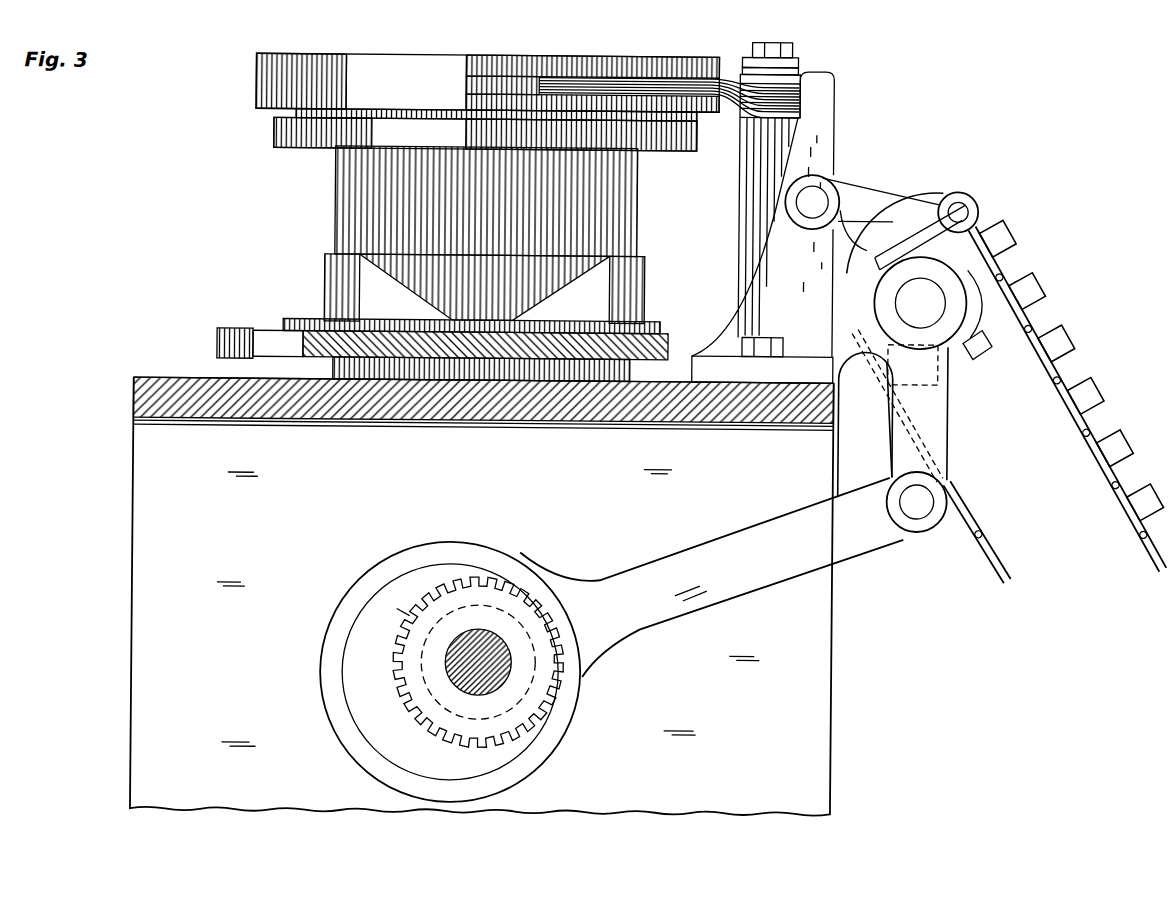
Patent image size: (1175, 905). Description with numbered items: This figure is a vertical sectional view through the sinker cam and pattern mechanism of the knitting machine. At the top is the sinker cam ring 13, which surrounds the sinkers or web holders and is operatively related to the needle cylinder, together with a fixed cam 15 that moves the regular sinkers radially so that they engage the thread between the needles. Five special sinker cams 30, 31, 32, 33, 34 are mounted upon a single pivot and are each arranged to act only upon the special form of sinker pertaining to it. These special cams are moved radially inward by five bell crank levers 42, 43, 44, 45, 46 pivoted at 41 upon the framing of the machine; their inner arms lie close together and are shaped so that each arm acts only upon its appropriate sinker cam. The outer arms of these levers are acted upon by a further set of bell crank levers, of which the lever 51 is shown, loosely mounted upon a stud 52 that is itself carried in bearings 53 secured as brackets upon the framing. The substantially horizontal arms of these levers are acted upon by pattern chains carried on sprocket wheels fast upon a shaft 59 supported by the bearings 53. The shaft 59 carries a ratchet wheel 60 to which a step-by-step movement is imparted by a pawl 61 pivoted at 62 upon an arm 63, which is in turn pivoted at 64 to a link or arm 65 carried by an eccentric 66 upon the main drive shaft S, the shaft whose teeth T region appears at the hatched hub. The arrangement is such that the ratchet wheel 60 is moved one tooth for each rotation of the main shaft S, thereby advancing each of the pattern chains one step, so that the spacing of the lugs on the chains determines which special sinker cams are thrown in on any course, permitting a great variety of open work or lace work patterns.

The sinker cam ring 13 is at (326, 59).
The fixed sinker cam 15 is at (612, 68).
The special sinker cam 30 is at (545, 78).
The special sinker cam 31 is at (540, 75).
The special sinker cam 32 is at (548, 83).
The special sinker cam 33 is at (556, 83).
The special sinker cam 34 is at (566, 80).
The pivot 41 is at (772, 40).
The bell crank lever 42 is at (806, 107).
The bell crank lever 43 is at (806, 95).
The bell crank lever 44 is at (805, 84).
The bell crank lever 45 is at (800, 77).
The bell crank lever 46 is at (793, 66).
The bell crank lever 51 is at (822, 131).
The stud 52 is at (814, 195).
The bearing 53 is at (745, 317).
The shaft 59 is at (932, 290).
The ratchet wheel 60 is at (985, 298).
The pawl 61 is at (905, 212).
The pivot 62 is at (960, 204).
The arm 63 is at (938, 378).
The pivot 64 is at (922, 497).
The link or arm 65 is at (707, 538).
The eccentric 66 is at (478, 575).
The gear teeth T is at (410, 620).
The main shaft S is at (451, 656).